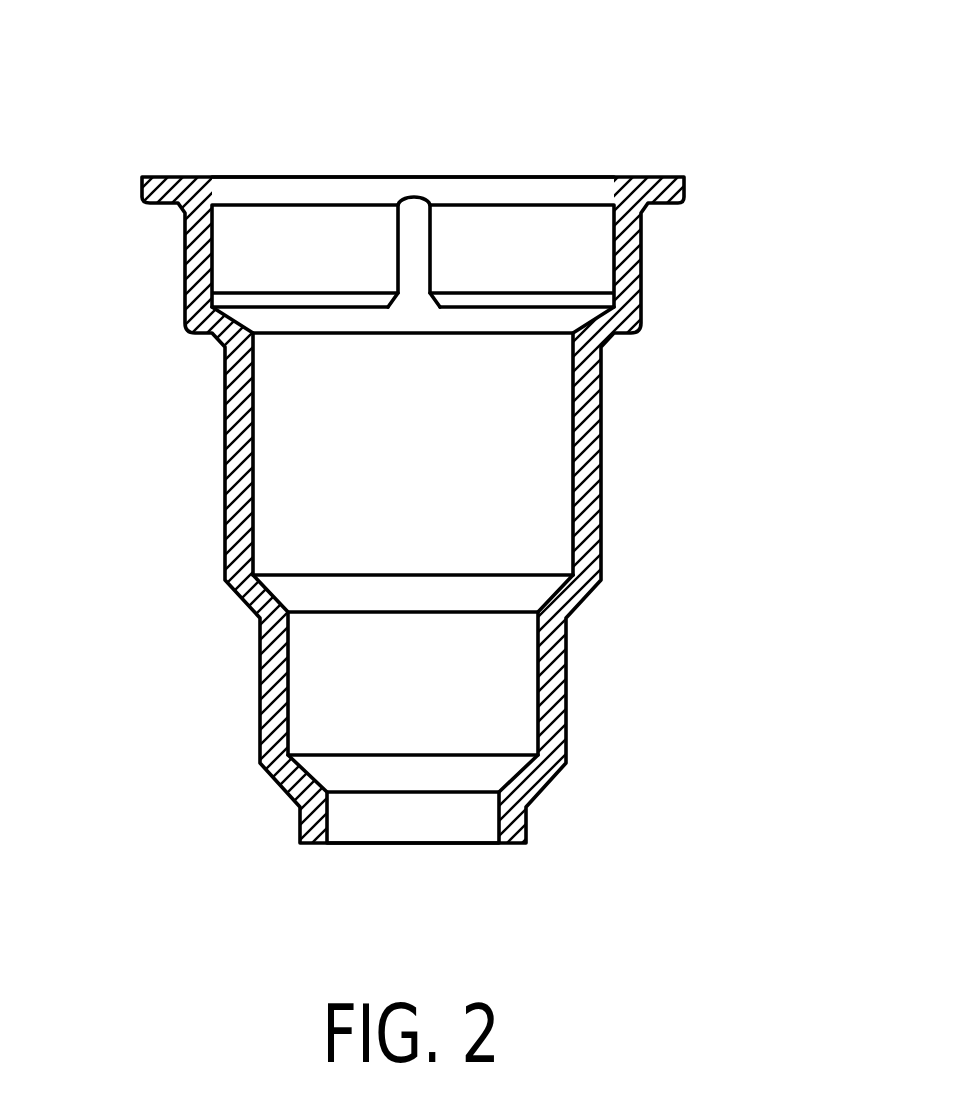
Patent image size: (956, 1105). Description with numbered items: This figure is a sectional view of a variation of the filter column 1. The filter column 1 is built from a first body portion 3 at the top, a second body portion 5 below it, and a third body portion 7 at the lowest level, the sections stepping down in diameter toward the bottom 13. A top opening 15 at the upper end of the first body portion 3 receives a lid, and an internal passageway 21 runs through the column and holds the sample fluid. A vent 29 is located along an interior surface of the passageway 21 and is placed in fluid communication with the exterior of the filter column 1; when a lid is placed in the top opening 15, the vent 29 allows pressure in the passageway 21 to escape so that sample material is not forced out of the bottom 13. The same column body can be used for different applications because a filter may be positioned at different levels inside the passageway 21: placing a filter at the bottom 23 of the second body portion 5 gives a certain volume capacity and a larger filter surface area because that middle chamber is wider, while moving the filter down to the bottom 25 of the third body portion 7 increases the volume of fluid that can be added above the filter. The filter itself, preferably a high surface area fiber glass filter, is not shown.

The filter column 1 is at (690, 105).
The first body portion 3 is at (643, 258).
The second body portion 5 is at (603, 463).
The third body portion 7 is at (260, 748).
The bottom 13 is at (435, 845).
The top opening 15 is at (558, 177).
The passageway 21 is at (290, 469).
The bottom of the second body portion 23 is at (490, 577).
The bottom of the third body portion 25 is at (427, 757).
The vent 29 is at (408, 212).